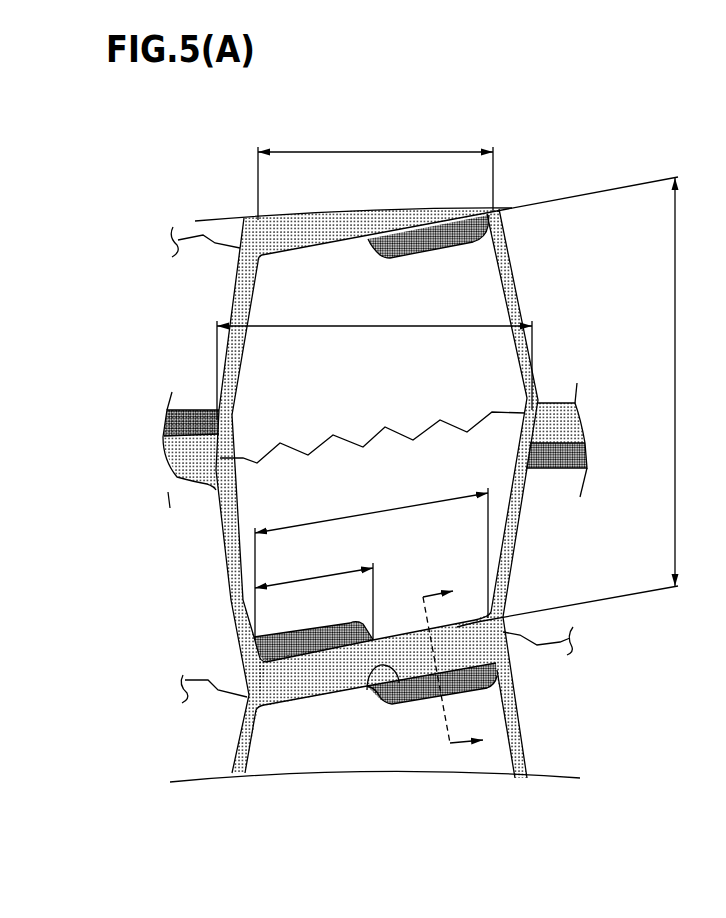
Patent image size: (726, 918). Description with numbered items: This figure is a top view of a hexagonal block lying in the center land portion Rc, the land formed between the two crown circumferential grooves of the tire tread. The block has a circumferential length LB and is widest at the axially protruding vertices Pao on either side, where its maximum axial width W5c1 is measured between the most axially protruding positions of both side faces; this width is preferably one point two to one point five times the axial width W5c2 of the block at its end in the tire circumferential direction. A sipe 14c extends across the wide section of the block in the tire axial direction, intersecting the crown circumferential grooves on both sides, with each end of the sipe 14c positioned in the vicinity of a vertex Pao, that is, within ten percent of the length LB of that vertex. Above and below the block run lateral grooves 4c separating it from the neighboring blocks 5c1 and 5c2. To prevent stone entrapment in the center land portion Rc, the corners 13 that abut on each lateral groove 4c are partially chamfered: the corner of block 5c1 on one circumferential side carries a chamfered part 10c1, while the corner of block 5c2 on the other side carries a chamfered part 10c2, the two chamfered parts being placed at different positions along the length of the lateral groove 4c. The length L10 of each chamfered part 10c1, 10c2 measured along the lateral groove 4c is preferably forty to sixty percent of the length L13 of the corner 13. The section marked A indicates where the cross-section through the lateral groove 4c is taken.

The center land portion Rc is at (370, 197).
The circumferential length of the hexagonal block LB is at (492, 398).
The hexagonal block 5c1 is at (267, 310).
The hexagonal block 5c2 is at (258, 741).
The axially outwardly protruding vertex Pao is at (206, 450).
The sipe 14c is at (455, 418).
The axial width of the hexagonal block at the circumferential end W5c2 is at (300, 150).
The maximum axial width of the hexagonal block W5c1 is at (301, 328).
The length of the corner L13 is at (372, 510).
The length of the chamfered part L10 is at (314, 578).
The lateral groove 4c is at (337, 672).
The chamfered part 10c1 is at (303, 648).
The chamfered part 10c2 is at (420, 687).
The corner 13 is at (367, 690).
The section line A- A is at (466, 666).